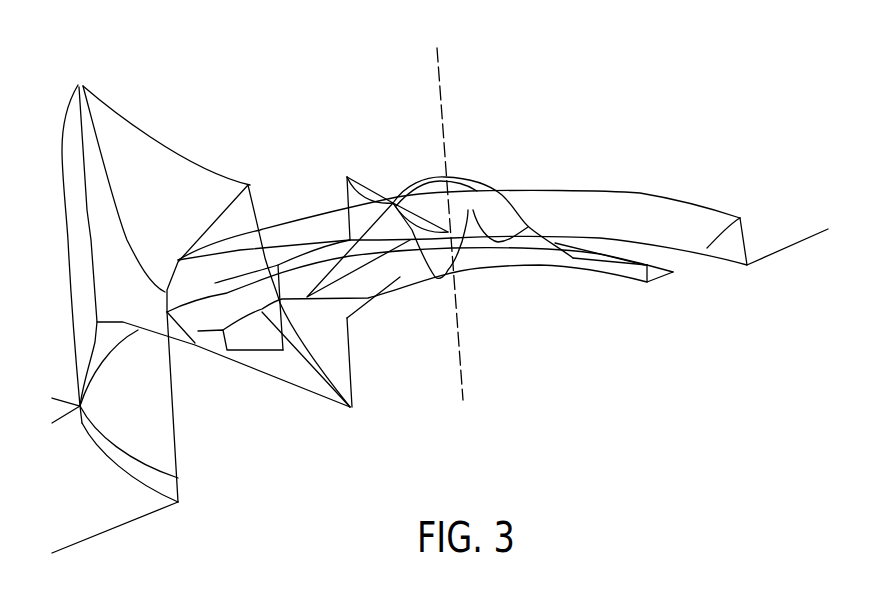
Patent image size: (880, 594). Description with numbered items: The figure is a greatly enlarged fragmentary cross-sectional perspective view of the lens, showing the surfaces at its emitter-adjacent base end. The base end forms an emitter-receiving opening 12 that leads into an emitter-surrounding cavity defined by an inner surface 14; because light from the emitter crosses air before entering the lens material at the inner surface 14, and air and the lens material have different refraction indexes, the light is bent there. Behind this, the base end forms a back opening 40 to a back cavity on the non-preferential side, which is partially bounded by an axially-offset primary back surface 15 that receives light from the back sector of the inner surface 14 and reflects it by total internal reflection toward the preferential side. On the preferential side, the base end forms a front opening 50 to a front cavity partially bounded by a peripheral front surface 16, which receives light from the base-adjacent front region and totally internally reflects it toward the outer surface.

The emitter-receiving opening 12 is at (498, 385).
The inner surface 14 is at (473, 210).
The primary back surface 15 is at (248, 249).
The peripheral front surface 16 is at (650, 283).
The back opening 40 is at (292, 452).
The front opening 50 is at (708, 290).